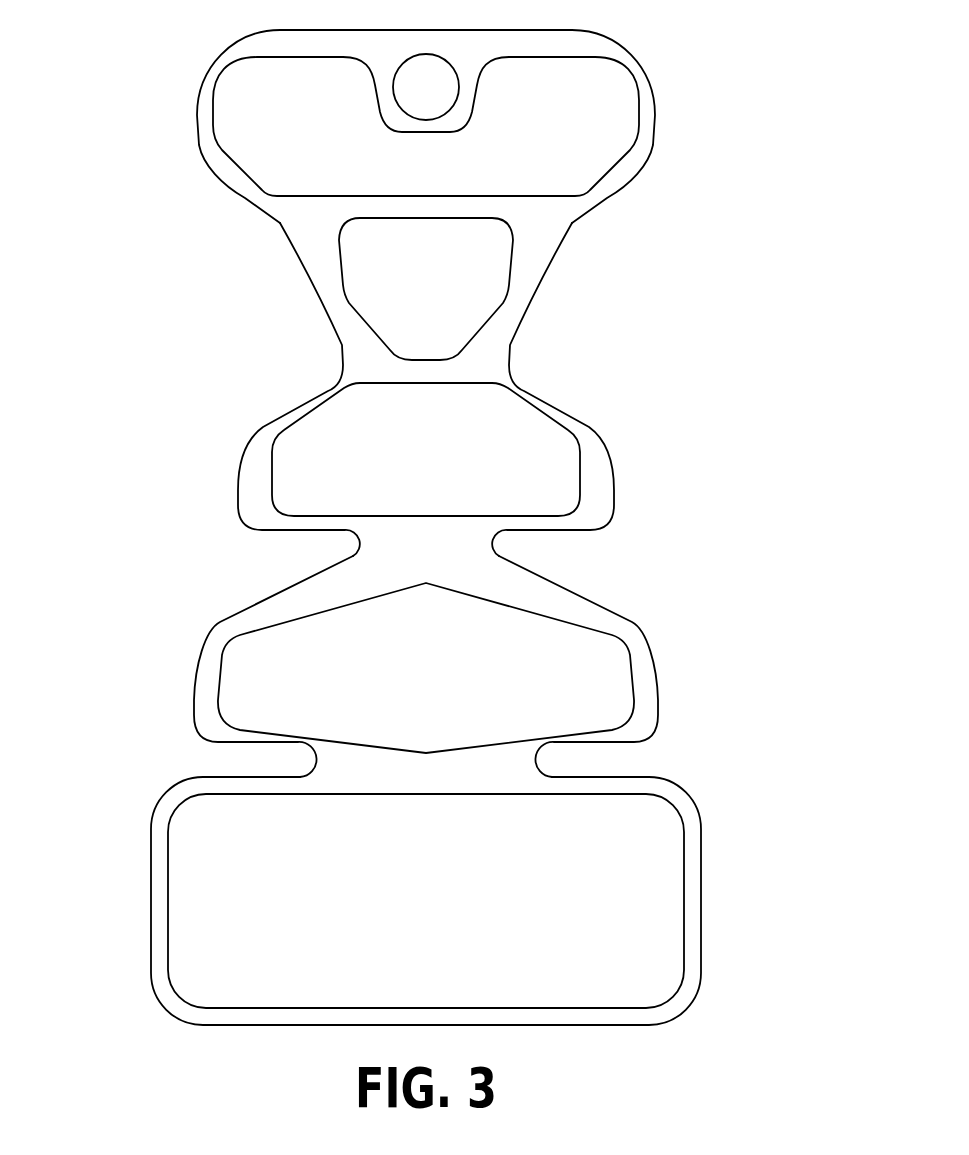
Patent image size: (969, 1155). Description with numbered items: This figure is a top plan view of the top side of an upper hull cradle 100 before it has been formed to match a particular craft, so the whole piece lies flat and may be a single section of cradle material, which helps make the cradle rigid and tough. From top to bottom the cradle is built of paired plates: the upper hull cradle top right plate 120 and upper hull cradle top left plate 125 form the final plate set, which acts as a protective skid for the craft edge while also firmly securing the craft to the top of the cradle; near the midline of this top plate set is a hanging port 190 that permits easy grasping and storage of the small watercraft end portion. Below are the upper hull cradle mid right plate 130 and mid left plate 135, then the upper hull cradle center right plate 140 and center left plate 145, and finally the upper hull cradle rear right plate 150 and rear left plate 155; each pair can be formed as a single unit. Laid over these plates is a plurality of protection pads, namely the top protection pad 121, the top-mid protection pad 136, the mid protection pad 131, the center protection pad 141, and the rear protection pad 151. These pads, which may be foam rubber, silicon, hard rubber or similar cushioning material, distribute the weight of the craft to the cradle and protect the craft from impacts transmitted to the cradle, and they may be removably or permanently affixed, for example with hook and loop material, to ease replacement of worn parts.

The upper hull cradle 100 is at (716, 74).
The upper hull cradle top right plate 120 is at (594, 206).
The upper hull cradle top protection pad 121 is at (237, 85).
The upper hull cradle top left plate 125 is at (258, 206).
The upper hull cradle mid right plate 130 is at (605, 522).
The upper hull cradle mid protection pad 131 is at (408, 464).
The upper hull cradle mid left plate 135 is at (247, 522).
The upper hull cradle top-mid protection pad 136 is at (408, 293).
The upper hull cradle center right plate 140 is at (663, 735).
The upper hull cradle center protection pad 141 is at (408, 692).
The upper hull cradle center left plate 145 is at (193, 733).
The upper hull cradle rear right plate 150 is at (687, 1010).
The upper hull cradle rear protection pad 151 is at (408, 914).
The upper hull cradle rear left plate 155 is at (163, 1005).
The hanging port 190 is at (420, 54).